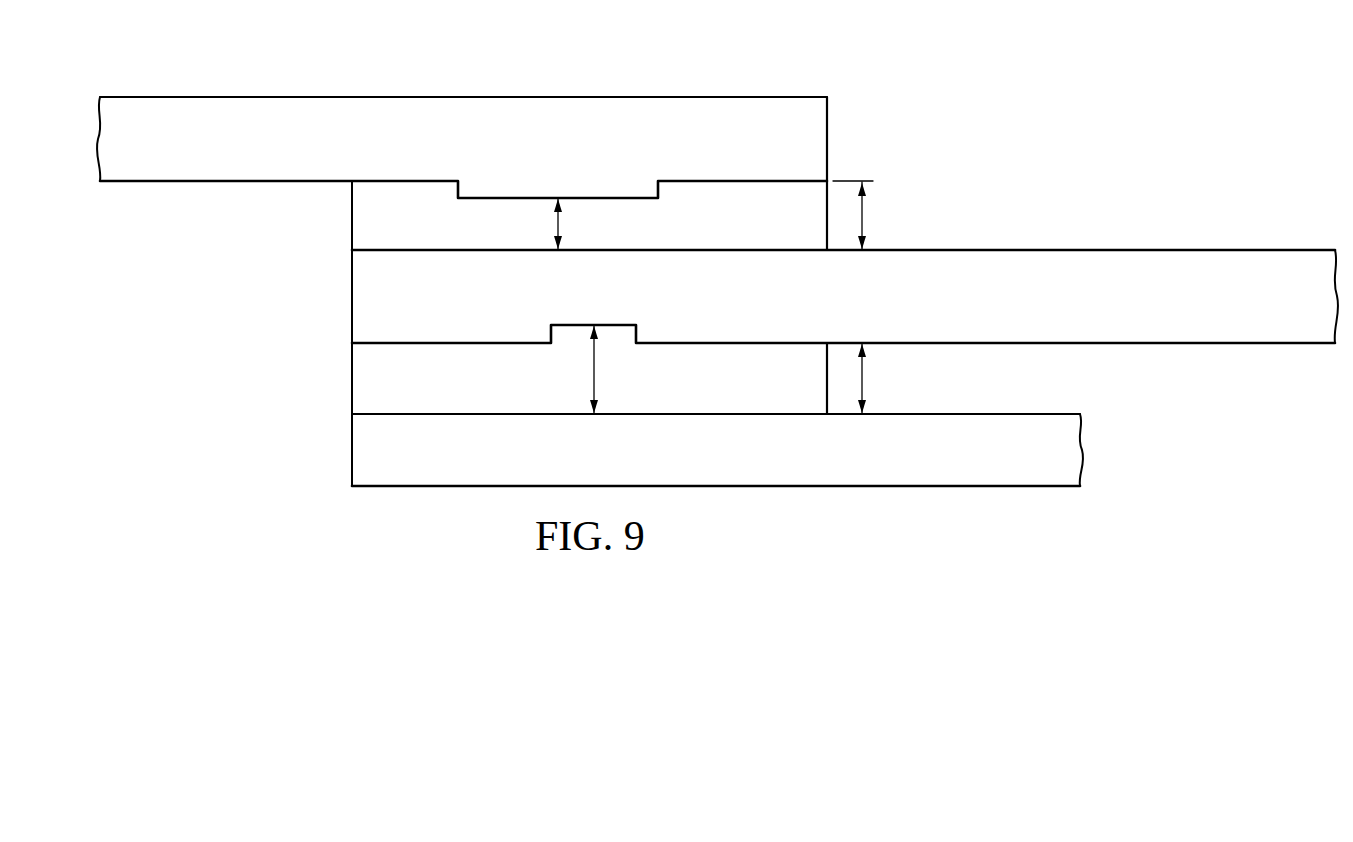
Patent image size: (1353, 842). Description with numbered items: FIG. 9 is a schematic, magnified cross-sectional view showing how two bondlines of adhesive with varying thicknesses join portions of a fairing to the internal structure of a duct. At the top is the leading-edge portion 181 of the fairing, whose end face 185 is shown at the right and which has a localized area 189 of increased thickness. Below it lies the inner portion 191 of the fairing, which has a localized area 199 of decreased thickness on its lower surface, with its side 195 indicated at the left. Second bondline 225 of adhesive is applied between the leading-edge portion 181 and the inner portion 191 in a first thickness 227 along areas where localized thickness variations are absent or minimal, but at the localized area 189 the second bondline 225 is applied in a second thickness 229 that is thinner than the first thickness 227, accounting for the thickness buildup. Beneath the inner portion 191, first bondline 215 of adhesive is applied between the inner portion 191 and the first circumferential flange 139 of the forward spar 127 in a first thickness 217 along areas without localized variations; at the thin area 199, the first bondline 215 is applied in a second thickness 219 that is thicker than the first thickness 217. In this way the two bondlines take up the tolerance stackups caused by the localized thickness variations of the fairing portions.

The leading-edge portion 181 is at (263, 96).
The end face of first bar 185 is at (828, 140).
The localized area of increased thickness 189 is at (497, 184).
The second bondline of adhesive 225 is at (352, 218).
The second thickness 229 is at (562, 228).
The first thickness 227 is at (864, 212).
The inner portion 191 is at (1183, 250).
The second bar side 195 is at (352, 297).
The localized area of decreased thickness 199 is at (571, 345).
The second thickness 219 is at (596, 371).
The first bondline of adhesive 215 is at (352, 377).
The first thickness 217 is at (864, 383).
The forward spar 127 is at (951, 488).
The first circumferential flange 139 is at (793, 488).